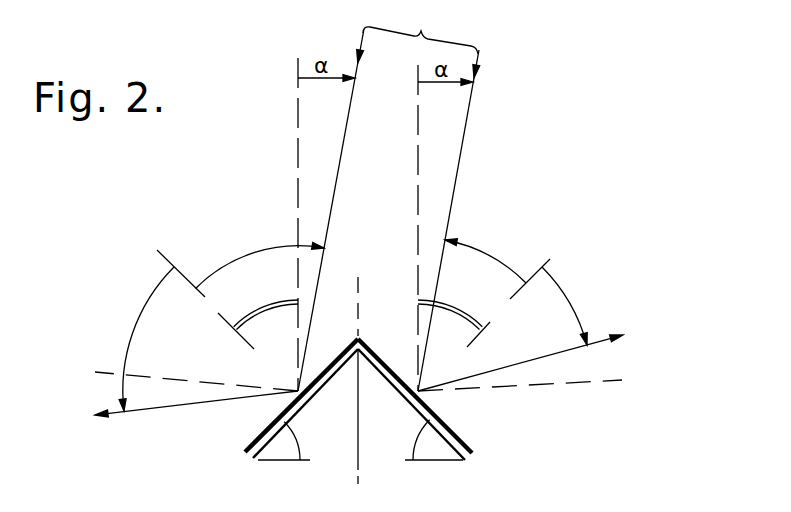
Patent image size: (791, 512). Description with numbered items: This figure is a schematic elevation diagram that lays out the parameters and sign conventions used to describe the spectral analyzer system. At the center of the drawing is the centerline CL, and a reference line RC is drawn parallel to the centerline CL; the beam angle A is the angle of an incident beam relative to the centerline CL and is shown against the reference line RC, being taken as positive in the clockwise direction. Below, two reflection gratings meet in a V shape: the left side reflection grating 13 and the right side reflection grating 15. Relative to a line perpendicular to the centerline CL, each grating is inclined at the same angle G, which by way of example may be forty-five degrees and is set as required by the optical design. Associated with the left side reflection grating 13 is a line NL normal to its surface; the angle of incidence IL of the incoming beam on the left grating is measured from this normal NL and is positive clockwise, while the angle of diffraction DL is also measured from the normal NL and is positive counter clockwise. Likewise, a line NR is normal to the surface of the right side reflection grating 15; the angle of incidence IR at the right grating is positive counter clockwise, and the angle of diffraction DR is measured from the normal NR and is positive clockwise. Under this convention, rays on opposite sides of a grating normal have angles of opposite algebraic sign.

The left side reflection grating 13 is at (243, 448).
The right side reflection grating 15 is at (472, 454).
The reference line RC is at (298, 70).
The beam angle A is at (385, 96).
The angle of inclination G is at (354, 380).
The centerline CL is at (358, 460).
The normal to the left side reflection grating NL is at (172, 260).
The normal to the right side reflection grating NR is at (547, 268).
The angle of incidence at the left side reflection grating IL is at (260, 269).
The angle of incidence at the right side reflection grating IR is at (485, 255).
The angle of diffraction at the left side reflection grating DL is at (196, 342).
The angle of diffraction at the right side reflection grating DR is at (520, 329).